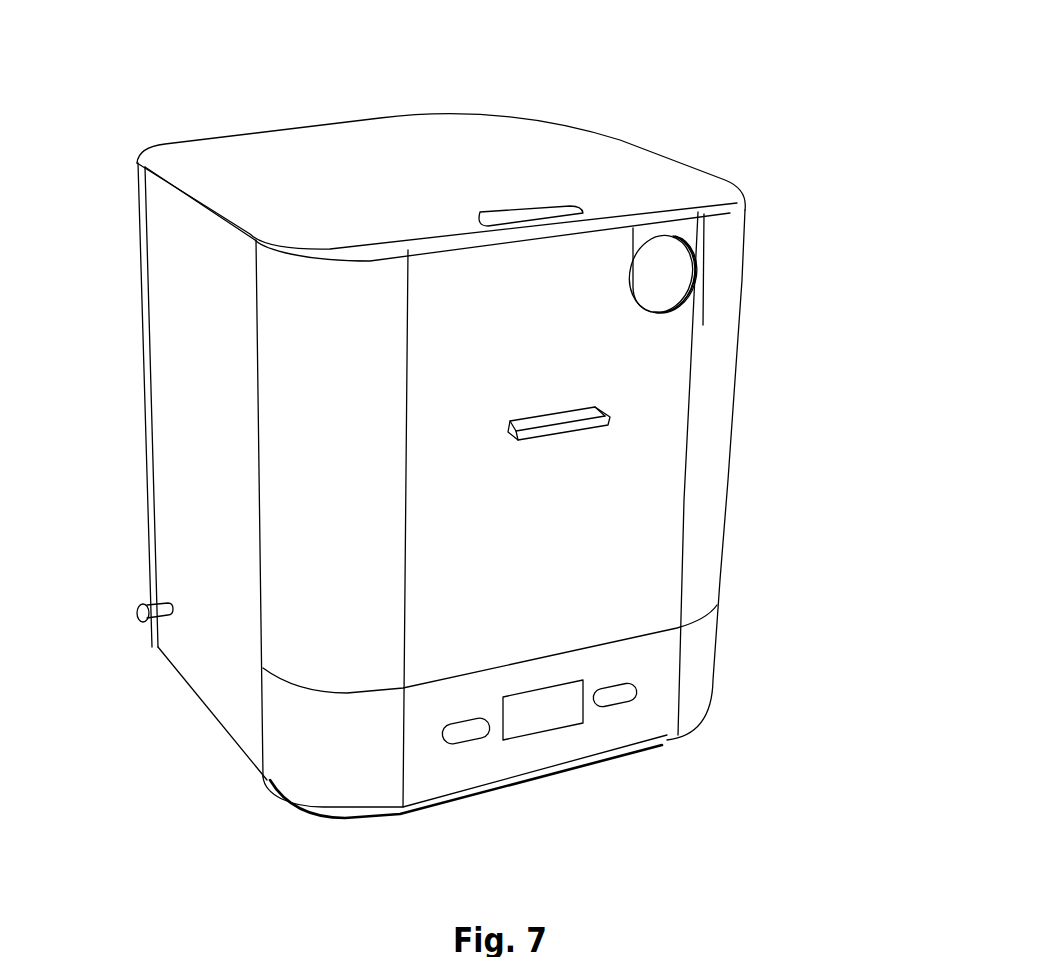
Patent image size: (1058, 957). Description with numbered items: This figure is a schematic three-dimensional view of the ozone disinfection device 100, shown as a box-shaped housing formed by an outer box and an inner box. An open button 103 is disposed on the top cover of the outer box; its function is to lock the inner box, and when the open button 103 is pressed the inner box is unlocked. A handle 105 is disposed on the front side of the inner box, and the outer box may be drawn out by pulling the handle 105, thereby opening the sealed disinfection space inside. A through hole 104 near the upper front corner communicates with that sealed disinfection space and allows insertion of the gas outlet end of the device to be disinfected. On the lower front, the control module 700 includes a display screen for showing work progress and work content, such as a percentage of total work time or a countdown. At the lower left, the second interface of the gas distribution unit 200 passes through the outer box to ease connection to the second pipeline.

The ozone disinfection device 100 is at (187, 387).
The open button 103 is at (538, 215).
The through hole 104 is at (657, 280).
The handle 105 is at (595, 433).
The gas distribution unit 200 is at (140, 617).
The control module 700 is at (557, 728).